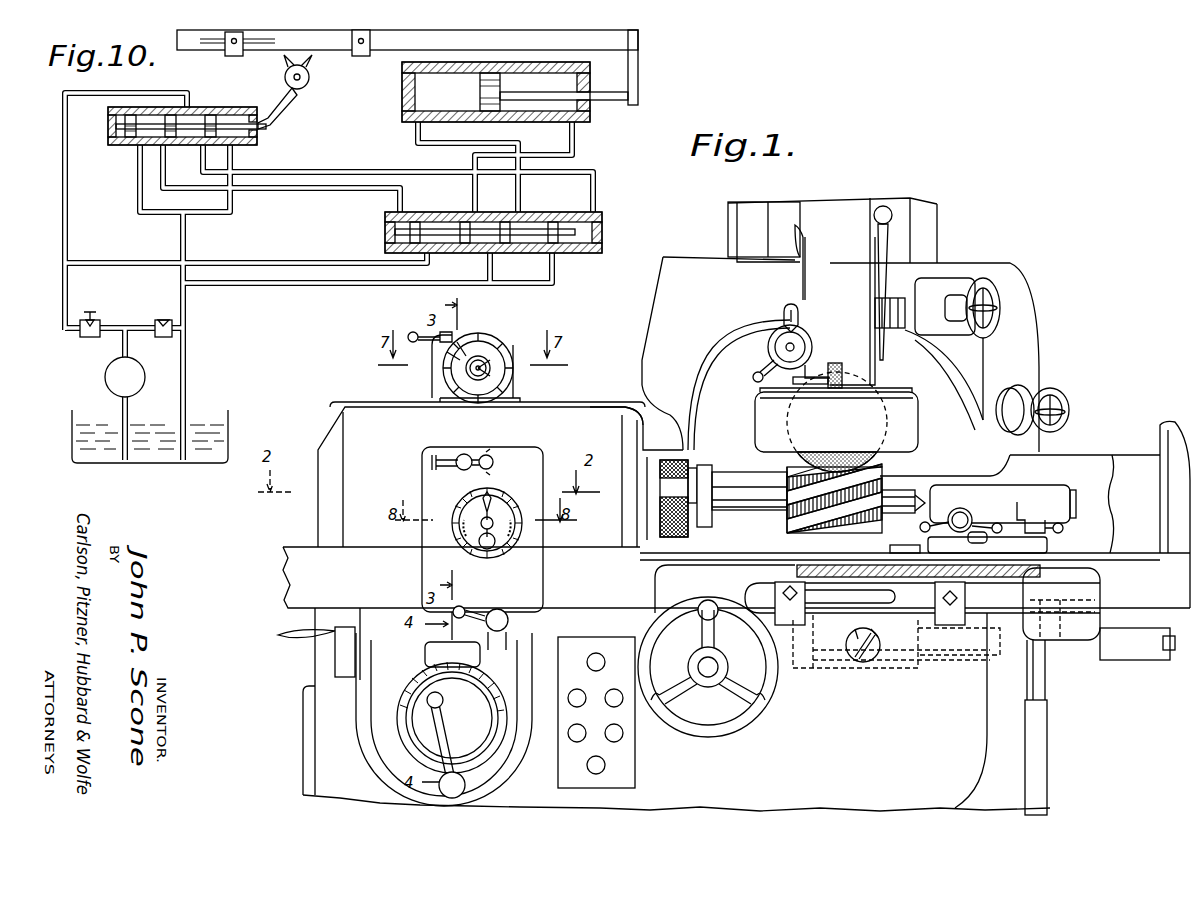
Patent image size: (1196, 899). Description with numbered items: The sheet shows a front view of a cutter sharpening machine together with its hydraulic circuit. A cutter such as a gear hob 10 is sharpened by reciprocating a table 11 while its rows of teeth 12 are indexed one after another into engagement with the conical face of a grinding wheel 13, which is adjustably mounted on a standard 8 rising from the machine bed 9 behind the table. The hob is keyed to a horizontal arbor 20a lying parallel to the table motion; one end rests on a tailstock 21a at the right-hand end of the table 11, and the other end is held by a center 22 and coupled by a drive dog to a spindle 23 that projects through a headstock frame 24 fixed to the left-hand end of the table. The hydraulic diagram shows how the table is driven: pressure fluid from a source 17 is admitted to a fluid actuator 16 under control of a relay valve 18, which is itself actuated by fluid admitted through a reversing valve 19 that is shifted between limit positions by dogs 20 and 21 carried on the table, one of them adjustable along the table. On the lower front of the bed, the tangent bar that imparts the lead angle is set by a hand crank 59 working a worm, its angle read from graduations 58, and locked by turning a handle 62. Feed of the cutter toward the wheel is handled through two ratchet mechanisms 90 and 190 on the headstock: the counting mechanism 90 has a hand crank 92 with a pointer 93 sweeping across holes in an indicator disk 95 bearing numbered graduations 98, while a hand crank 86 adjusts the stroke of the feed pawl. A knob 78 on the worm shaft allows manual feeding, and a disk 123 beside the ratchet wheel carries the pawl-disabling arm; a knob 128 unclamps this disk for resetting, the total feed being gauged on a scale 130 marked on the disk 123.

In FIG. 1, the standard 8 is at (953, 264).
In FIG. 1, the machine bed 9 is at (1032, 735).
In FIG. 1, the gear hob 10 is at (834, 540).
In FIG. 10, the table 11 is at (330, 50).
In FIG. 1, the table 11 is at (1135, 590).
In FIG. 1, the teeth 12 is at (787, 492).
In FIG. 1, the grinding wheel 13 is at (824, 452).
In FIG. 10, the fluid actuator 16 is at (400, 110).
In FIG. 10, the source 17 is at (138, 366).
In FIG. 10, the relay valve 18 is at (443, 210).
In FIG. 10, the reversing valve 19 is at (185, 107).
In FIG. 10, the dog 20 is at (361, 56).
In FIG. 1, the dog 20 is at (936, 592).
In FIG. 1, the arbor 20a is at (737, 500).
In FIG. 10, the dog 21 is at (226, 52).
In FIG. 1, the dog 21 is at (803, 630).
In FIG. 1, the tailstock 21a is at (926, 492).
In FIG. 1, the center 22 is at (704, 528).
In FIG. 1, the spindle 23 is at (674, 458).
In FIG. 1, the headstock frame 24 is at (625, 404).
In FIG. 1, the graduations 58 is at (420, 672).
In FIG. 1, the hand crank 59 is at (277, 633).
In FIG. 1, the handle 62 is at (452, 722).
In FIG. 1, the knob 78 is at (486, 360).
In FIG. 1, the hand crank 86 is at (452, 456).
In FIG. 1, the ratchet mechanism 90 is at (448, 487).
In FIG. 1, the hand crank 92 is at (490, 548).
In FIG. 1, the pointer 93 is at (478, 515).
In FIG. 1, the indicator disk 95 is at (498, 505).
In FIG. 1, the numbered graduations 98 is at (465, 543).
In FIG. 1, the disk 123 is at (482, 364).
In FIG. 1, the knob 128 is at (490, 374).
In FIG. 1, the scale 130 is at (485, 355).
In FIG. 1, the ratchet mechanism 190 is at (445, 380).